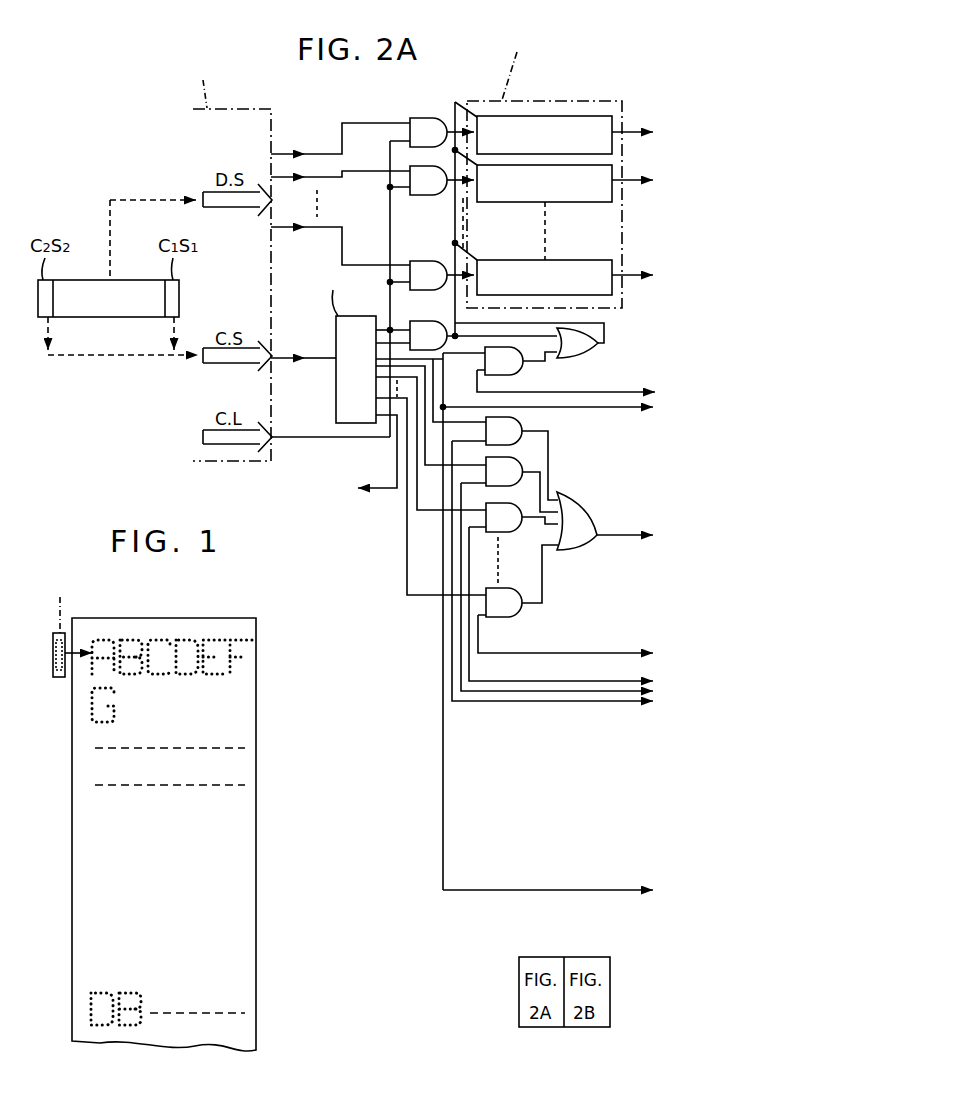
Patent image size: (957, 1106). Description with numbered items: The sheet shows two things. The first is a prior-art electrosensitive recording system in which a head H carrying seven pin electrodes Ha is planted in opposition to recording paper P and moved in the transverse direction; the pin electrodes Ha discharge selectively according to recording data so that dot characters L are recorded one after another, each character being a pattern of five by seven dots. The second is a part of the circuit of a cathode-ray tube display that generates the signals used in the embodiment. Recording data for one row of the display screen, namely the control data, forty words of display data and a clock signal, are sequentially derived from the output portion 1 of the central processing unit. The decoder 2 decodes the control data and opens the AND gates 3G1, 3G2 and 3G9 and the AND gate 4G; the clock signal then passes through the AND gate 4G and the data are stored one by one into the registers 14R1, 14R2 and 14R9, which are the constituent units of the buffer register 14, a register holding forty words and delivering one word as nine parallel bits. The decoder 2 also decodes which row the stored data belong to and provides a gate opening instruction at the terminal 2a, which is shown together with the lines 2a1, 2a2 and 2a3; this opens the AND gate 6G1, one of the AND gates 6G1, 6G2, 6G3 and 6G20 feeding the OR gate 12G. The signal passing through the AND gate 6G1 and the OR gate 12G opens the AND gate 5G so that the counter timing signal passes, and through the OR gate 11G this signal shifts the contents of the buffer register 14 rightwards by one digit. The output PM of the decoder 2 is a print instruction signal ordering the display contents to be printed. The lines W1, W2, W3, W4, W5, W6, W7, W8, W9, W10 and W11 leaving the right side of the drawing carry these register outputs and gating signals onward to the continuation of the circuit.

In FIG. 2A, the output portion 1 is at (240, 108).
In FIG. 2A, the decoder 2 is at (336, 334).
In FIG. 2A, the terminal 2a is at (404, 443).
In FIG. 2A, the decoder output line 2a1 is at (382, 329).
In FIG. 2A, the decoder output line 2a2 is at (426, 368).
In FIG. 2A, the decoder output line 2a3 is at (378, 428).
In FIG. 2A, the AND gate 3G1 is at (422, 118).
In FIG. 2A, the AND gate 3G2 is at (417, 193).
In FIG. 2A, the AND gate 3G9 is at (432, 262).
In FIG. 2A, the AND gate 4G is at (427, 326).
In FIG. 2A, the AND gate 5G is at (518, 365).
In FIG. 2A, the AND gate 6G1 is at (523, 428).
In FIG. 2A, the AND gate 6G2 is at (523, 468).
In FIG. 2A, the AND gate 6G3 is at (509, 528).
In FIG. 2A, the AND gate 6G20 is at (514, 609).
In FIG. 2A, the OR gate 11G is at (587, 348).
In FIG. 2A, the OR gate 12G is at (591, 528).
In FIG. 2A, the buffer register 14 is at (533, 100).
In FIG. 2A, the register 14R1 is at (603, 116).
In FIG. 2A, the register 14R2 is at (596, 202).
In FIG. 2A, the register 14R9 is at (513, 245).
In FIG. 2A, the output line W1 is at (650, 131).
In FIG. 2A, the output line W2 is at (650, 178).
In FIG. 2A, the output line W3 is at (650, 274).
In FIG. 2A, the output line W4 is at (652, 391).
In FIG. 2A, the output line W5 is at (652, 410).
In FIG. 2A, the output line W6 is at (652, 534).
In FIG. 2A, the output line W7 is at (647, 652).
In FIG. 2A, the output line W8 is at (646, 681).
In FIG. 2A, the output line W9 is at (646, 691).
In FIG. 2A, the output line W10 is at (646, 702).
In FIG. 2A, the output line W11 is at (637, 889).
In FIG. 2A, the print instruction signal PM is at (357, 490).
In FIG. 1, the recording paper P is at (185, 625).
In FIG. 1, the head H is at (62, 629).
In FIG. 1, the pin electrodes Ha is at (54, 645).
In FIG. 1, the dot characters L is at (173, 703).